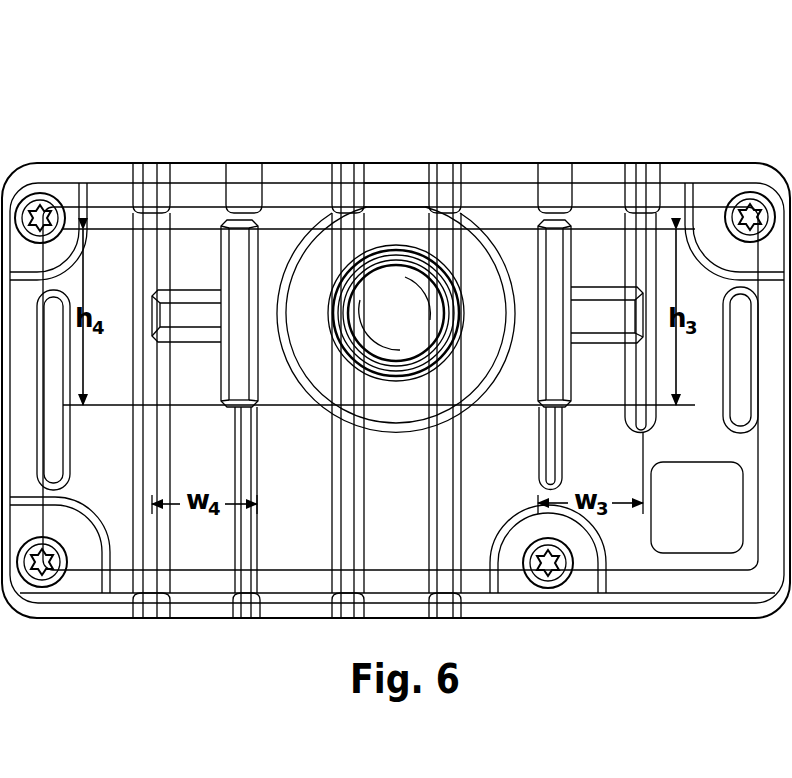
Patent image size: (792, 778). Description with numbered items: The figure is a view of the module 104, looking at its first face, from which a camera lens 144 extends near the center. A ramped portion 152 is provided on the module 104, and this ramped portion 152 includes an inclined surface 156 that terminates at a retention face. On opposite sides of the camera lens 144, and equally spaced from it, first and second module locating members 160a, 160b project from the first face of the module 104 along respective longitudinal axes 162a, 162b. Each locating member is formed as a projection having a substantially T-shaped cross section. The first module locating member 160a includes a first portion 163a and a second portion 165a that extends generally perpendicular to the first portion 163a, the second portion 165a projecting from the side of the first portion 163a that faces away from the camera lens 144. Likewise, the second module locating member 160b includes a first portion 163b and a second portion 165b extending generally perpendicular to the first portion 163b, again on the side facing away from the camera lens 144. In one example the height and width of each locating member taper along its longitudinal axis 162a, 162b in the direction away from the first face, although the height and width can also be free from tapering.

The module 104 is at (306, 103).
The camera lens 144 is at (431, 293).
The ramped portion 152 is at (413, 134).
The inclined surface 156 is at (390, 193).
The first module locating member 160a is at (569, 200).
The second module locating member 160b is at (226, 212).
The longitudinal axis 162a is at (588, 310).
The longitudinal axis 162b is at (213, 290).
The first portion 163a is at (553, 362).
The first portion 163b is at (240, 367).
The second portion 165a is at (596, 317).
The second portion 165b is at (180, 317).